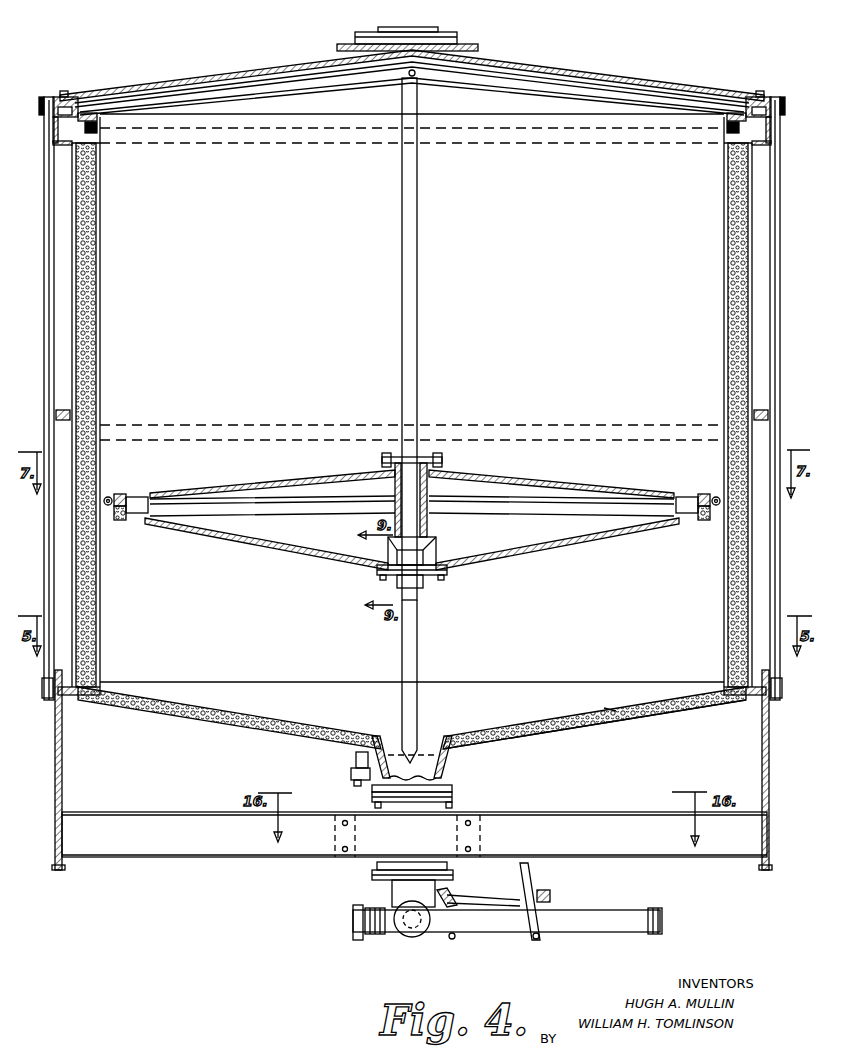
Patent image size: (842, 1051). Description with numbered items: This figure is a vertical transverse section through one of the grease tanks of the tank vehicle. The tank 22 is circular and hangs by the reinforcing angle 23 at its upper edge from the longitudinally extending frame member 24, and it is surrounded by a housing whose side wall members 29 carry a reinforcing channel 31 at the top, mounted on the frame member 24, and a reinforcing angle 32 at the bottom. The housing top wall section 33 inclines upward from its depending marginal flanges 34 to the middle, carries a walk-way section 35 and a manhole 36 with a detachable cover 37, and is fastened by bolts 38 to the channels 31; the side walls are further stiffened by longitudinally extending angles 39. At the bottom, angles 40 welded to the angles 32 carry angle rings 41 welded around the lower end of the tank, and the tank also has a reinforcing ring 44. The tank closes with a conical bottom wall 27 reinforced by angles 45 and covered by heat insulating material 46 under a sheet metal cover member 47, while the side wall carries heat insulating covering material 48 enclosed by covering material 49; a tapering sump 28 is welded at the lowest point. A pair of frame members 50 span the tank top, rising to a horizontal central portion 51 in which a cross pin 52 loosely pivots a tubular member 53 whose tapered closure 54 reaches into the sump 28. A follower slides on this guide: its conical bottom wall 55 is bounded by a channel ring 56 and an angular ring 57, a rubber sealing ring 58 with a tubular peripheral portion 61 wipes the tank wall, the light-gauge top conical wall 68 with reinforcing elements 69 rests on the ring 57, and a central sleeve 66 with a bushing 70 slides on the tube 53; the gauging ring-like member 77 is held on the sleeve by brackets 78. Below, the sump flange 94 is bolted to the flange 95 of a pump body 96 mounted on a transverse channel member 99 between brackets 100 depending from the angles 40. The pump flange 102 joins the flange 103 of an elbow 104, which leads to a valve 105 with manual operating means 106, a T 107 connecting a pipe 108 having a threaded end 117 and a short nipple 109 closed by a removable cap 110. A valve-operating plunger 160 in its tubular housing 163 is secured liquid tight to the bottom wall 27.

The tank 22 is at (100, 298).
The reinforcing angle 23 is at (103, 125).
The longitudinally extending frame member 24 is at (58, 130).
The conical bottom wall 27 is at (250, 715).
The tapering sump 28 is at (448, 768).
The side wall member 29 is at (52, 320).
The reinforcing channel 31 is at (86, 96).
The reinforcing angle 32 is at (47, 700).
The top wall section 33 is at (248, 69).
The depending marginal flange 34 is at (42, 105).
The walk-way section 35 is at (478, 48).
The manhole 36 is at (450, 42).
The detachable cover 37 is at (405, 29).
The bolt 38 is at (64, 90).
The longitudinally extending angle 39 is at (55, 415).
The angle 40 is at (96, 648).
The angle ring 41 is at (100, 664).
The reinforcing ring 44 is at (100, 427).
The angle 45 is at (611, 707).
The heat insulating material 46 is at (662, 715).
The cover member 47 is at (592, 728).
The heat insulating covering material 48 is at (90, 350).
The covering material 49 is at (46, 255).
The frame member 50 is at (180, 97).
The horizontal central portion 51 is at (449, 73).
The cross pin 52 is at (408, 74).
The tubular member 53 is at (413, 212).
The tapered closure 54 is at (425, 758).
The conical bottom wall 55 is at (553, 540).
The channel ring 56 is at (117, 508).
The ring 57 is at (146, 520).
The sealing ring 58 is at (123, 494).
The tubular peripheral portion 61 is at (103, 495).
The sleeve 66 is at (430, 520).
The top conical wall 68 is at (250, 485).
The reinforcing element 69 is at (583, 501).
The bushing 70 is at (434, 455).
The ring-like member 77 is at (436, 462).
The bracket 78 is at (443, 464).
The flange 94 is at (454, 790).
The flange 95 is at (454, 800).
The pump body 96 is at (377, 807).
The transverse channel member 99 is at (545, 822).
The bracket 100 is at (60, 744).
The flange 102 is at (447, 873).
The flange 103 is at (377, 880).
The elbow 104 is at (393, 895).
The valve 105 is at (423, 938).
The manual operating means 106 is at (522, 882).
The T 107 is at (397, 935).
The pipe 108 is at (583, 917).
The nipple 109 is at (378, 940).
The removable cap 110 is at (353, 930).
The threaded end 117 is at (660, 908).
The plunger 160 is at (370, 735).
The tubular housing 163 is at (352, 766).